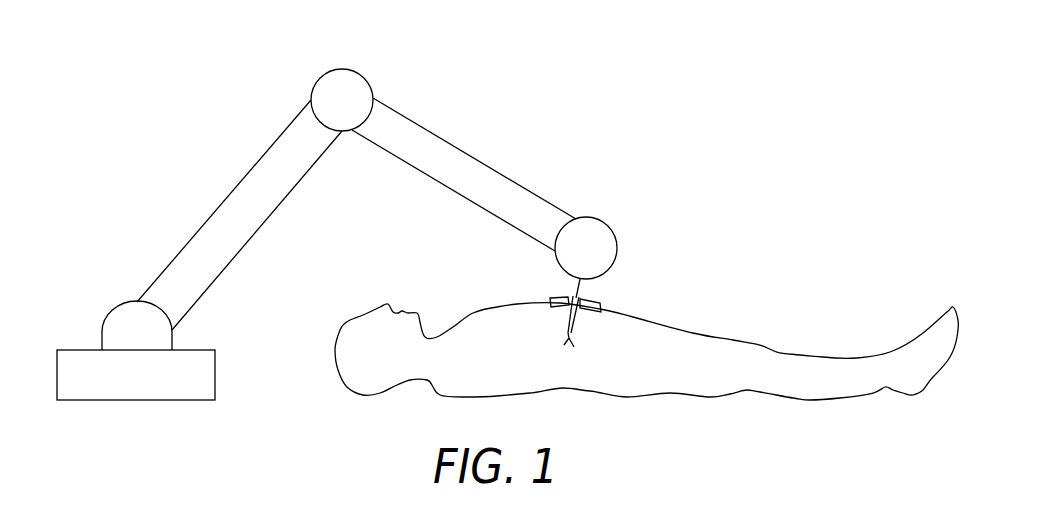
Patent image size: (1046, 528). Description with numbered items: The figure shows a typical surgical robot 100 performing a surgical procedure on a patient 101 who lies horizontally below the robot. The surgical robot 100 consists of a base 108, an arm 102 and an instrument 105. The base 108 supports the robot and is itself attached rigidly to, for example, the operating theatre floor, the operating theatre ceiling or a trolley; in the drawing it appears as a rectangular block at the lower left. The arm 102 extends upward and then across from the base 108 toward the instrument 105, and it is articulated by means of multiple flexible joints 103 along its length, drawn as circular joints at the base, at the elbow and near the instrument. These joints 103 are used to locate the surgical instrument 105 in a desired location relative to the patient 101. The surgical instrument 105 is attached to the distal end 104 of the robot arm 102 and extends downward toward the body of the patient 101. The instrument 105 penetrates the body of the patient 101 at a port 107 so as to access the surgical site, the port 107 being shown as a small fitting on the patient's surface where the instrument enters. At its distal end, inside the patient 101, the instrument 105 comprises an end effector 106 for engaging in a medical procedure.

The surgical robot 100 is at (113, 257).
The patient 101 is at (695, 412).
The arm 102 is at (480, 146).
The flexible joints 103 is at (343, 69).
The distal end 104 is at (617, 249).
The instrument 105 is at (572, 329).
The end effector 106 is at (568, 338).
The port 107 is at (559, 300).
The base 108 is at (215, 361).